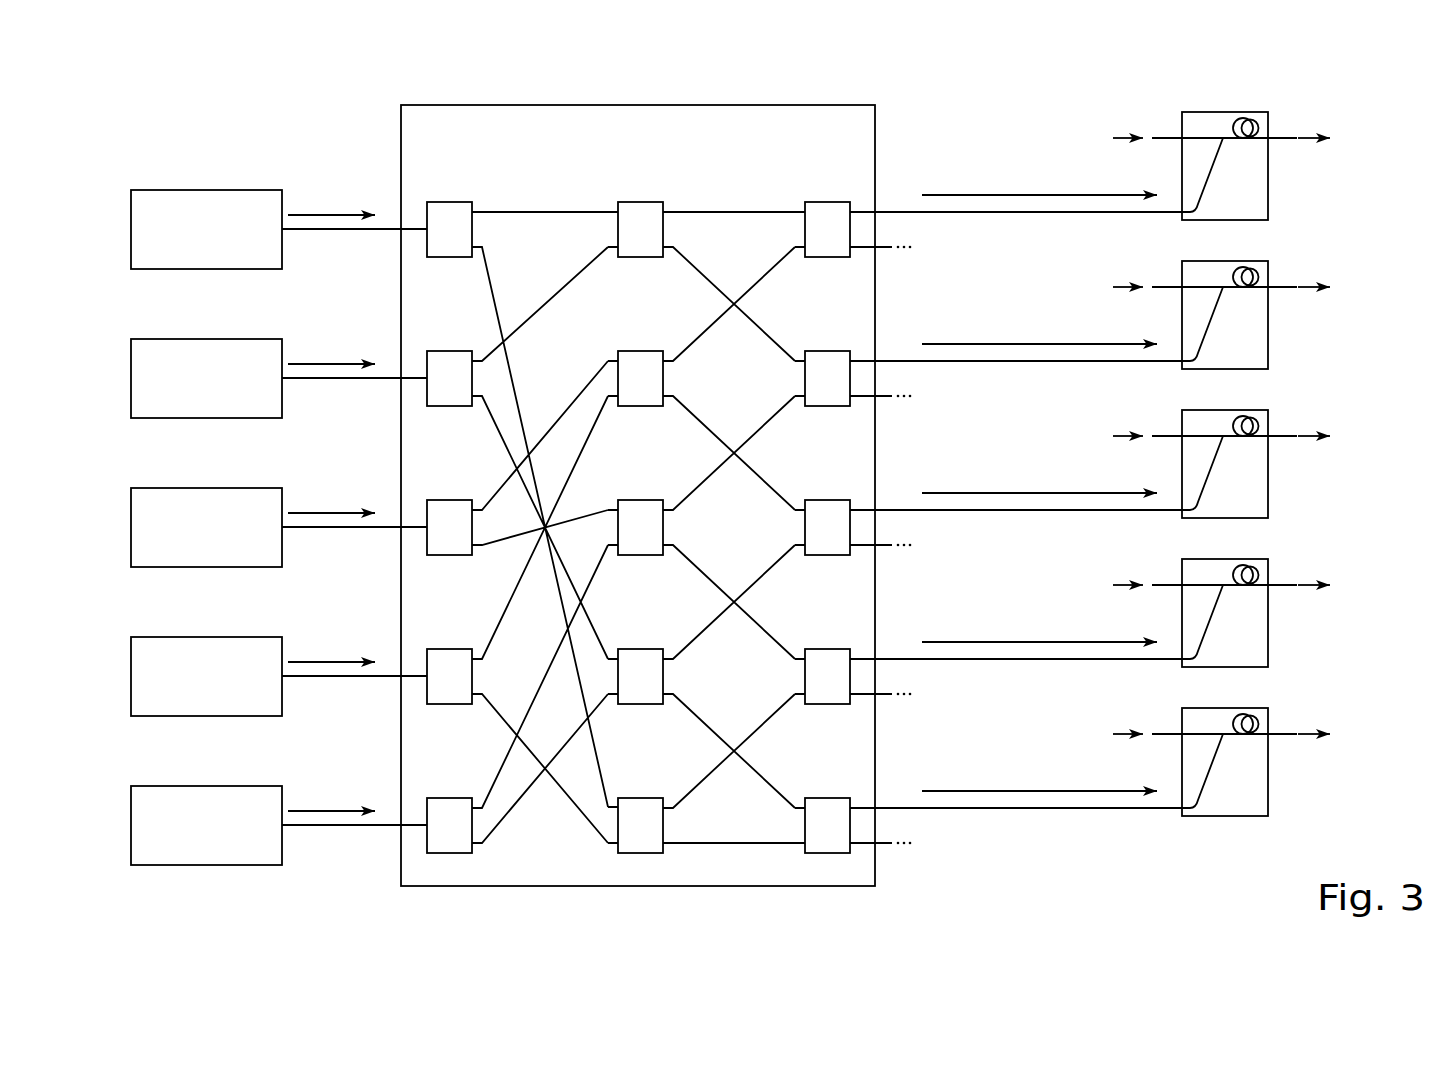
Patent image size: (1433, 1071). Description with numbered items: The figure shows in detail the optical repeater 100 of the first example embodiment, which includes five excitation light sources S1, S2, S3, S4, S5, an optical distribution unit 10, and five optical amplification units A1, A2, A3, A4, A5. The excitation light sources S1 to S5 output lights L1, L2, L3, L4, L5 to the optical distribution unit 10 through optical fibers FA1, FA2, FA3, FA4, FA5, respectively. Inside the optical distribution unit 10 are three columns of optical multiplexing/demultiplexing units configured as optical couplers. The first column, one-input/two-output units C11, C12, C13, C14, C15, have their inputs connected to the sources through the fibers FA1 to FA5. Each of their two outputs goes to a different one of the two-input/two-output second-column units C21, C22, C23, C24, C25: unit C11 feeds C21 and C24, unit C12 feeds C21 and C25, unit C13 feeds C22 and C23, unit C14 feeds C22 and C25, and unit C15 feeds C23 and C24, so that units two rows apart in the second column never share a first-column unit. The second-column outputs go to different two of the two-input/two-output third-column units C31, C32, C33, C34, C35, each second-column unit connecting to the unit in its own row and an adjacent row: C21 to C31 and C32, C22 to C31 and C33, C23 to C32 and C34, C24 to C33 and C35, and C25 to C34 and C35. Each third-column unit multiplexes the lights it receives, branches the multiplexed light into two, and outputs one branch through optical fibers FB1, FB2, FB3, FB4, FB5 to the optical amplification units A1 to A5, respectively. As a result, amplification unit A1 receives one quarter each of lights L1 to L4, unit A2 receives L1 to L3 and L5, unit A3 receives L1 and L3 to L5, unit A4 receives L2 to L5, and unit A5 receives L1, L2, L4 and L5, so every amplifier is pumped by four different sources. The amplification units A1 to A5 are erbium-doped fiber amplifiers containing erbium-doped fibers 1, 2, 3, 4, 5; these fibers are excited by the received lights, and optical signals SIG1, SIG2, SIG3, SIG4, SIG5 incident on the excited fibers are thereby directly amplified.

The optical repeater 100 is at (190, 114).
The optical distribution unit 10 is at (400, 128).
The erbium-doped fiber 1 is at (1266, 152).
The erbium-doped fiber 2 is at (1266, 301).
The erbium-doped fiber 3 is at (1266, 450).
The erbium-doped fiber 4 is at (1266, 599).
The erbium-doped fiber 5 is at (1266, 748).
The excitation light source S1 is at (131, 230).
The excitation light source S2 is at (131, 379).
The excitation light source S3 is at (131, 528).
The excitation light source S4 is at (131, 677).
The excitation light source S5 is at (131, 826).
The light L1 is at (331, 199).
The light L2 is at (331, 348).
The light L3 is at (331, 497).
The light L4 is at (331, 646).
The light L5 is at (331, 795).
The optical fiber FA1 is at (320, 232).
The optical fiber FA2 is at (320, 381).
The optical fiber FA3 is at (320, 530).
The optical fiber FA4 is at (320, 679).
The optical fiber FA5 is at (320, 828).
The optical multiplexing/demultiplexing unit C11 is at (449, 214).
The optical multiplexing/demultiplexing unit C12 is at (449, 363).
The optical multiplexing/demultiplexing unit C13 is at (449, 512).
The optical multiplexing/demultiplexing unit C14 is at (449, 661).
The optical multiplexing/demultiplexing unit C15 is at (449, 810).
The optical multiplexing/demultiplexing unit C21 is at (640, 214).
The optical multiplexing/demultiplexing unit C22 is at (640, 363).
The optical multiplexing/demultiplexing unit C23 is at (640, 512).
The optical multiplexing/demultiplexing unit C24 is at (640, 661).
The optical multiplexing/demultiplexing unit C25 is at (640, 810).
The optical multiplexing/demultiplexing unit C31 is at (827, 214).
The optical multiplexing/demultiplexing unit C32 is at (827, 363).
The optical multiplexing/demultiplexing unit C33 is at (827, 512).
The optical multiplexing/demultiplexing unit C34 is at (827, 661).
The optical multiplexing/demultiplexing unit C35 is at (827, 810).
The optical fiber FB1 is at (900, 208).
The optical fiber FB2 is at (900, 357).
The optical fiber FB3 is at (900, 506).
The optical fiber FB4 is at (900, 655).
The optical fiber FB5 is at (900, 804).
The optical signal SIG1 is at (1222, 139).
The optical signal SIG2 is at (1222, 288).
The optical signal SIG3 is at (1222, 437).
The optical signal SIG4 is at (1222, 586).
The optical signal SIG5 is at (1222, 735).
The optical amplification unit A1 is at (1270, 185).
The optical amplification unit A2 is at (1270, 334).
The optical amplification unit A3 is at (1270, 483).
The optical amplification unit A4 is at (1270, 632).
The optical amplification unit A5 is at (1270, 781).